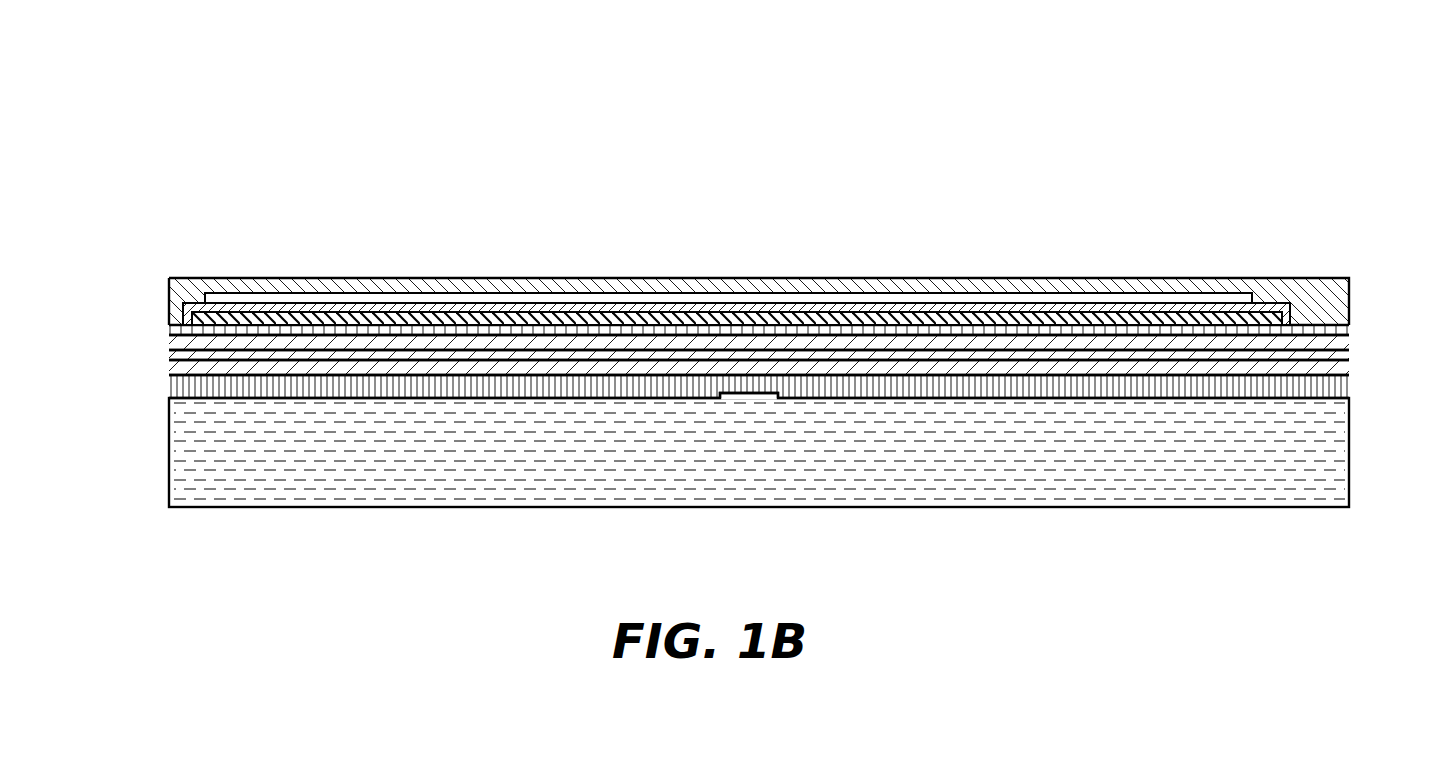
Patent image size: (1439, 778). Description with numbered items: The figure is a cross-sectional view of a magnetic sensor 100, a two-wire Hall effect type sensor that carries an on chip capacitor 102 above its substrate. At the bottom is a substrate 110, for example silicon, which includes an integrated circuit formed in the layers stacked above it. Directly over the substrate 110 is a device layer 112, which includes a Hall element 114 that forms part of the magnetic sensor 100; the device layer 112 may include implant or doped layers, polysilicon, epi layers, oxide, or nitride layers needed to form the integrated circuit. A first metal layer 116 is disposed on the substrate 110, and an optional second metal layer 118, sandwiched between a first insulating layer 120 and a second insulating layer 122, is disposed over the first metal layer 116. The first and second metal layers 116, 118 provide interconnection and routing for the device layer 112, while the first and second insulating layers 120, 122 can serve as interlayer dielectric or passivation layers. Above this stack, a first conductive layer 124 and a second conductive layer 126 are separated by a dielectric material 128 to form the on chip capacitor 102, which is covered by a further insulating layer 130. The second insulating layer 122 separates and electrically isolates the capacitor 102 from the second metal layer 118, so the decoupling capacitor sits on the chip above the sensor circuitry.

The magnetic sensor 100 is at (1212, 103).
The on chip capacitor 102 is at (155, 293).
The substrate 110 is at (1338, 450).
The device layer 112 is at (177, 384).
The Hall element 114 is at (750, 398).
The first metal layer 116 is at (1337, 365).
The second metal layer 118 is at (1338, 342).
The first insulating layer 120 is at (177, 355).
The second insulating layer 122 is at (177, 329).
The first conductive layer 124 is at (883, 322).
The second conductive layer 126 is at (660, 297).
The dielectric material 128 is at (1110, 308).
The further insulating layer 130 is at (433, 278).